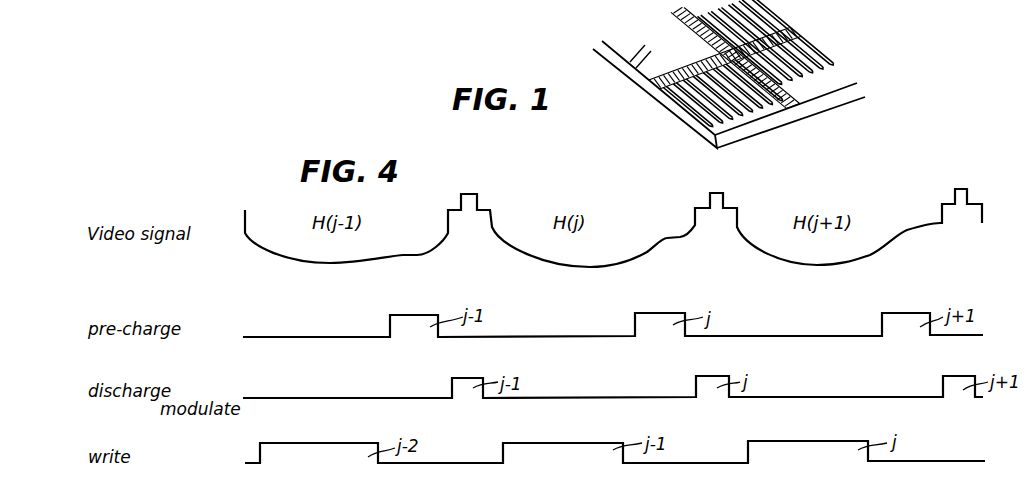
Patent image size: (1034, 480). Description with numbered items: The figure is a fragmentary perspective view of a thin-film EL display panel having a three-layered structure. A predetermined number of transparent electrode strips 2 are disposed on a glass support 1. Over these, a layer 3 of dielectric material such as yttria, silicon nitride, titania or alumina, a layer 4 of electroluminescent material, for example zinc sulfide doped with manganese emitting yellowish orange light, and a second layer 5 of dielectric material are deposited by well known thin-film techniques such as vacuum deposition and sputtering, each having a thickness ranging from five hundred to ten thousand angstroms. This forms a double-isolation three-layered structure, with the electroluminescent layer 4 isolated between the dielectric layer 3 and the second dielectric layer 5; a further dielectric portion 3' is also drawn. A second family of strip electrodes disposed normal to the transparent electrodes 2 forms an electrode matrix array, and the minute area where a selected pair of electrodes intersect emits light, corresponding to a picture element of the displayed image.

The glass support 1 is at (818, 107).
The transparent electrode strips 2 is at (701, 122).
The layer of dielectric material 3 is at (719, 81).
The insulating layer 3' is at (690, 50).
The layer of electroluminescent material 4 is at (642, 50).
The second layer of dielectric material 5 is at (758, 34).